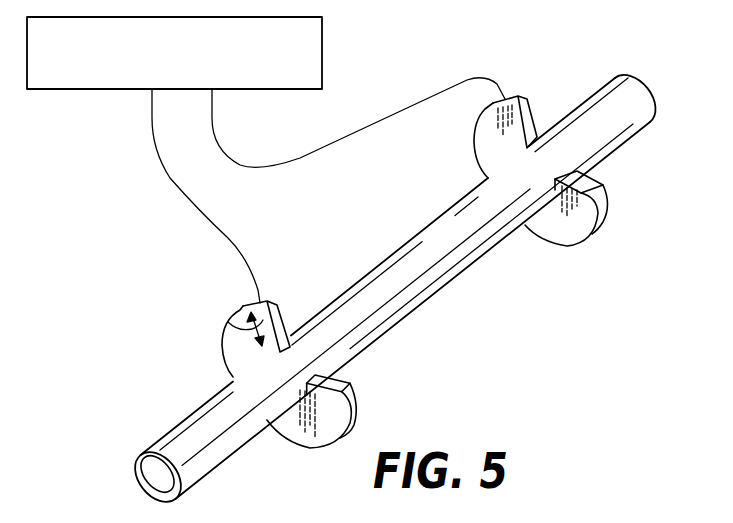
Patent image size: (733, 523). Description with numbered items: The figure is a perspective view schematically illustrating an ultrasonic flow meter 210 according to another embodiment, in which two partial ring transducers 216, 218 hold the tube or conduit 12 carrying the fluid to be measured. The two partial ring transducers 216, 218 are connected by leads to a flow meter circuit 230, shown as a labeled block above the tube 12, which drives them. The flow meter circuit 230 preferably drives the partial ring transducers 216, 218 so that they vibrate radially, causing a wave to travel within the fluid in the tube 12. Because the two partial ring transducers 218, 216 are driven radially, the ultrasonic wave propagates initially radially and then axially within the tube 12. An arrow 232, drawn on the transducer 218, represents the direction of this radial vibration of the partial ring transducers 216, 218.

The tube or conduit 12 is at (603, 143).
The ultrasonic flow meter 210 is at (509, 52).
The partial ring transducer 216 is at (600, 225).
The partial ring transducer 218 is at (230, 357).
The flow meter circuit 230 is at (322, 53).
The arrow 232 is at (228, 322).